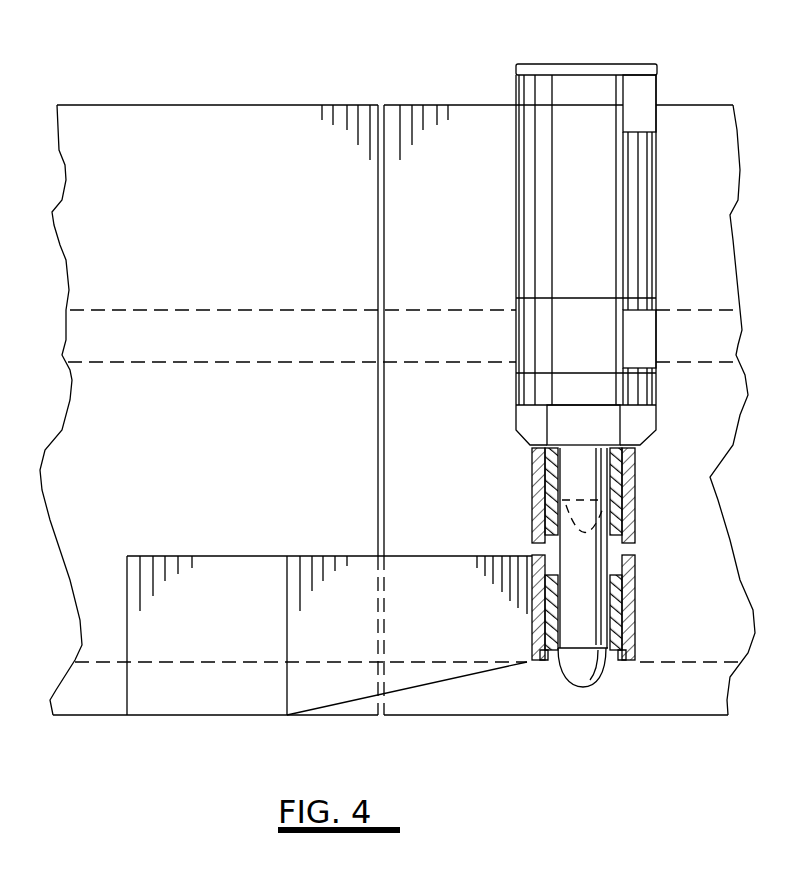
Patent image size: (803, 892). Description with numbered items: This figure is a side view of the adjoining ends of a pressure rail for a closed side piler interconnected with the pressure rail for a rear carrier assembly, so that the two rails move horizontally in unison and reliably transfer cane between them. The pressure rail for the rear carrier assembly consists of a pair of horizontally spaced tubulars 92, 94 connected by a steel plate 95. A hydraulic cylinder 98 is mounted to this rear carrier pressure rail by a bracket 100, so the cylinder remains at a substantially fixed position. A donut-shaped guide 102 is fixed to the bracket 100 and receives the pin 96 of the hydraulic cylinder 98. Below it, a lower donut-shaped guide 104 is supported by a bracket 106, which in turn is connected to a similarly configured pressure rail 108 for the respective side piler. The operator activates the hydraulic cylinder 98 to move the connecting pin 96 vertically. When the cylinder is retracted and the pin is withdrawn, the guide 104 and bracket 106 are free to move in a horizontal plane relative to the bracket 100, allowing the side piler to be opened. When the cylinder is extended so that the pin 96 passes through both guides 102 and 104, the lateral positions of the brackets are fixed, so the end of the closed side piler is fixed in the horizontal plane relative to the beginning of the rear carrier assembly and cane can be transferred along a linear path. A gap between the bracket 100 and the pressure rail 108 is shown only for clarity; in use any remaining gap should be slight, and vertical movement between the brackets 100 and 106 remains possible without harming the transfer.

The tubular 92 is at (722, 338).
The tubular 94 is at (675, 688).
The steel plate 95 is at (680, 155).
The pin 96 is at (583, 637).
The hydraulic cylinder 98 is at (640, 242).
The bracket 100 is at (557, 234).
The donut-shaped guide 102 is at (635, 470).
The lower donut-shaped guide 104 is at (637, 590).
The bracket 106 is at (207, 680).
The pressure rail 108 is at (297, 115).